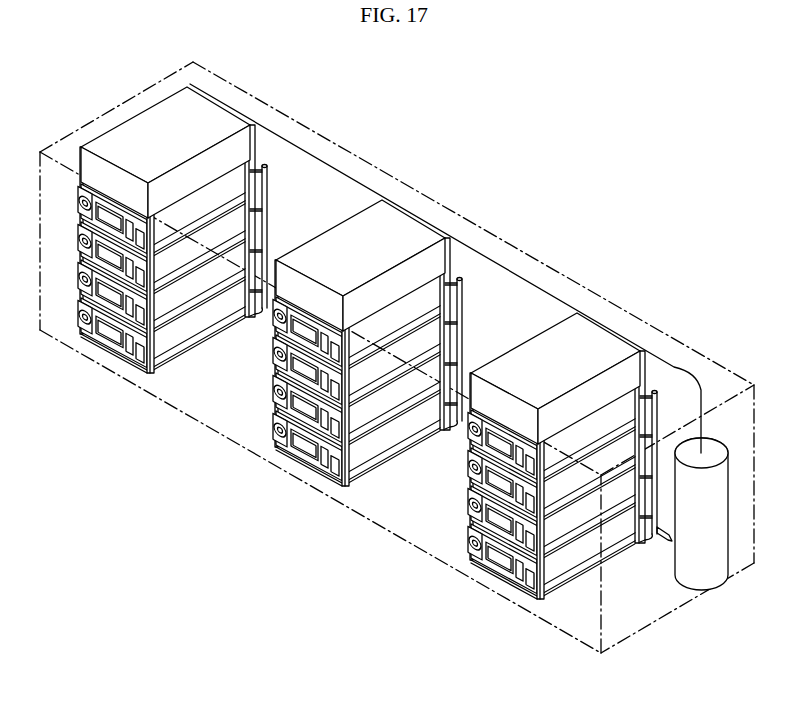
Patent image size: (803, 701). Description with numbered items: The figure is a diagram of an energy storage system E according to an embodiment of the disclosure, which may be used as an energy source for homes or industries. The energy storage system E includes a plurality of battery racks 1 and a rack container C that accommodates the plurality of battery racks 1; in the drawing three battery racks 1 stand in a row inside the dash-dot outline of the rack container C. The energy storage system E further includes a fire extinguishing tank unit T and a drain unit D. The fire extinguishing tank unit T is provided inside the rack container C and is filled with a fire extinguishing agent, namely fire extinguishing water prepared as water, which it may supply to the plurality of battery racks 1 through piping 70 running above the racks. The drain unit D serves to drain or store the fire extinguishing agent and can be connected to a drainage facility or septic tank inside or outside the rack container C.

The battery rack 1 is at (102, 362).
The pipe 70 is at (323, 158).
The rack container C is at (187, 413).
The drain unit D is at (657, 535).
The energy storage system E is at (397, 357).
The fire extinguishing tank unit T is at (700, 553).